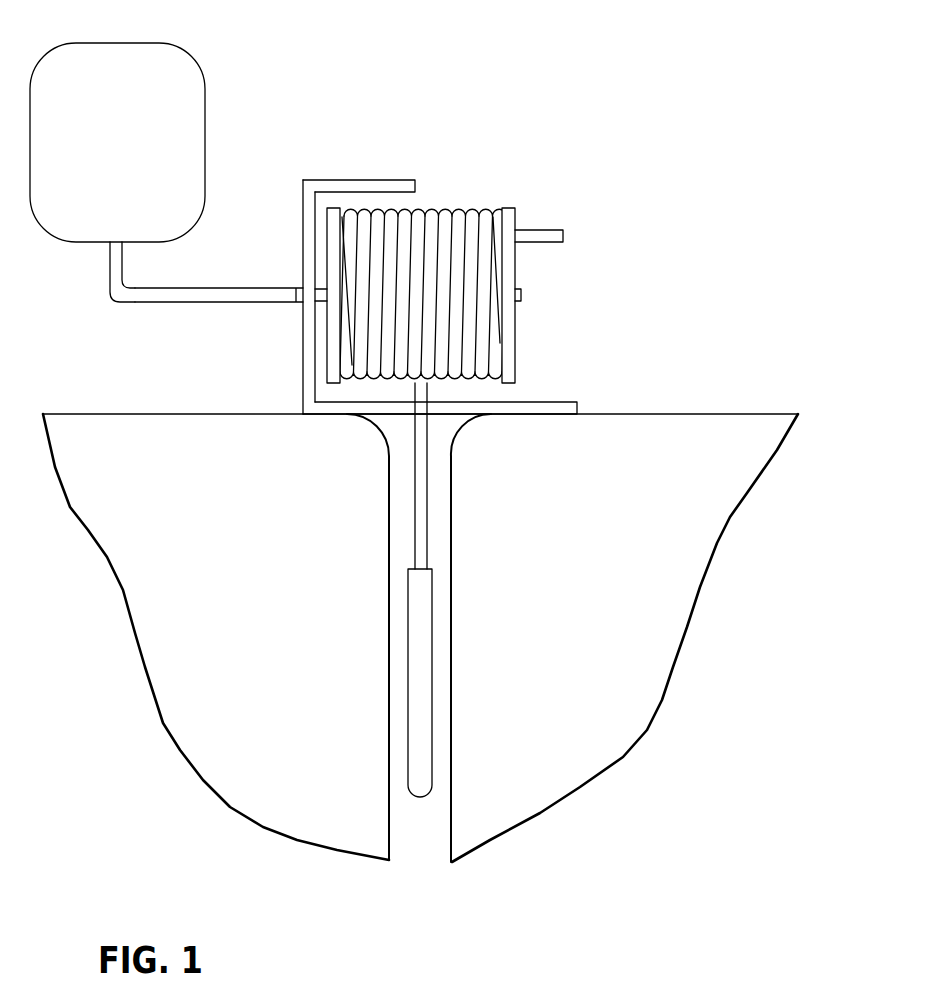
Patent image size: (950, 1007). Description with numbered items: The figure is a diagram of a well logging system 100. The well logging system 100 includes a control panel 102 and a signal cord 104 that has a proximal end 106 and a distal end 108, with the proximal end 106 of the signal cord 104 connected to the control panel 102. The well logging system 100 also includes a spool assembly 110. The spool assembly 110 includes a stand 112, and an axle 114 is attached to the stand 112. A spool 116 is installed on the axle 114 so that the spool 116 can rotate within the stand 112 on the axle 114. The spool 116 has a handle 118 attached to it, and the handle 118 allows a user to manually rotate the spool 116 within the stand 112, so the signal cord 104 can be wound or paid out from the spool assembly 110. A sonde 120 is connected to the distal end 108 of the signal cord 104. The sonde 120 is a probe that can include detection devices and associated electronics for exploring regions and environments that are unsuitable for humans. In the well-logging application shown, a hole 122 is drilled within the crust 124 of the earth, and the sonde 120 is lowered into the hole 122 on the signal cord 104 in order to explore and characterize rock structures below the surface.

The well logging system 100 is at (606, 122).
The control panel 102 is at (181, 65).
The signal cord 104 is at (217, 292).
The proximal end 106 is at (115, 257).
The distal end 108 is at (419, 526).
The spool assembly 110 is at (332, 180).
The stand 112 is at (310, 330).
The axle 114 is at (518, 301).
The spool 116 is at (508, 205).
The handle 118 is at (557, 233).
The sonde 120 is at (420, 778).
The hole 122 is at (450, 822).
The crust 124 is at (660, 423).